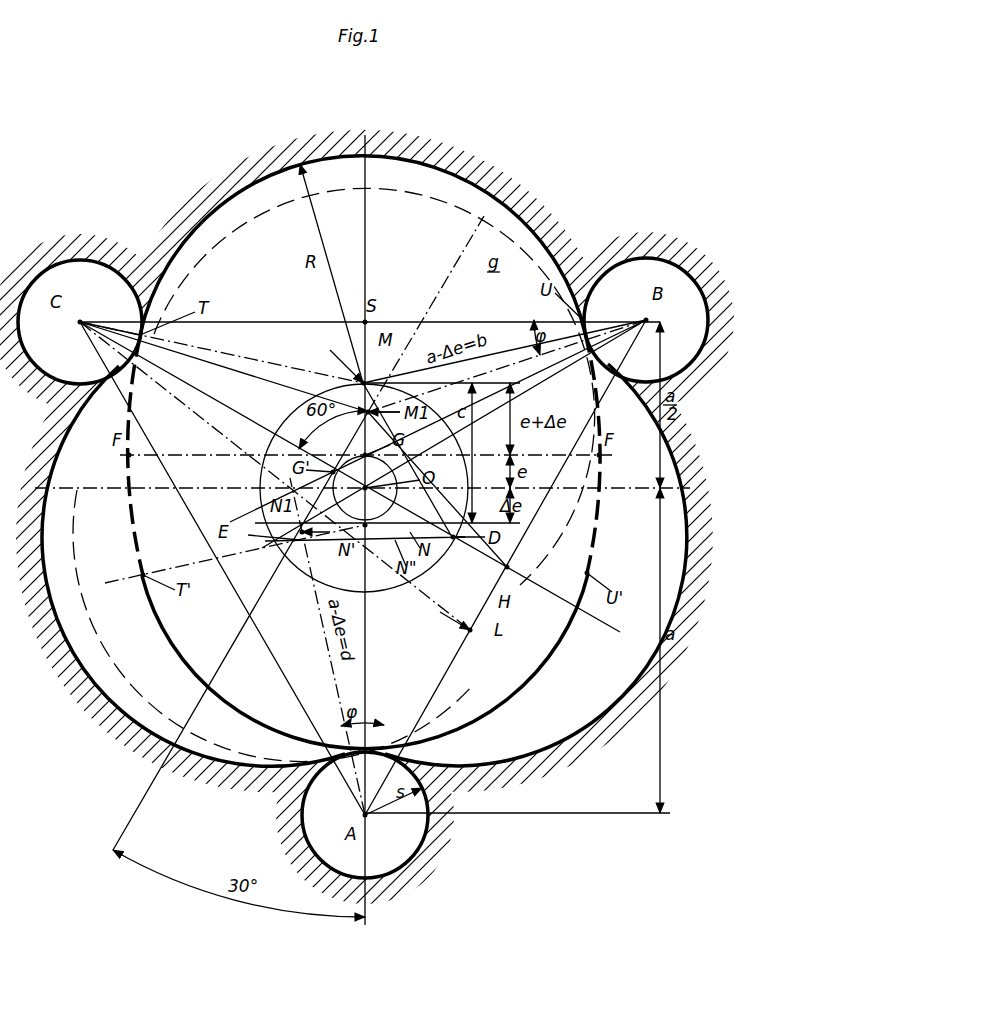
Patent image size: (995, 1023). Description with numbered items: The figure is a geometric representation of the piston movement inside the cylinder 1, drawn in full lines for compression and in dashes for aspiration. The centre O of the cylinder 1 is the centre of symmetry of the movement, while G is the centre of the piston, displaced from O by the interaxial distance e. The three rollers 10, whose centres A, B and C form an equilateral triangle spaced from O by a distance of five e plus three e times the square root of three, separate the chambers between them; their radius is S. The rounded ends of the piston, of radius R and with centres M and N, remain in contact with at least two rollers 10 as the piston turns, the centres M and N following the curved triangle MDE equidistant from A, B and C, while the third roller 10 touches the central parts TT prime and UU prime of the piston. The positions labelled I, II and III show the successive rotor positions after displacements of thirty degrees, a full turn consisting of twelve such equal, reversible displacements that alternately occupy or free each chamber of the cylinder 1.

The cylinder 1 is at (562, 196).
The rollers 10 is at (698, 331).
The housing arc position I is at (430, 150).
The housing arc position II is at (642, 562).
The housing arc position III is at (112, 576).